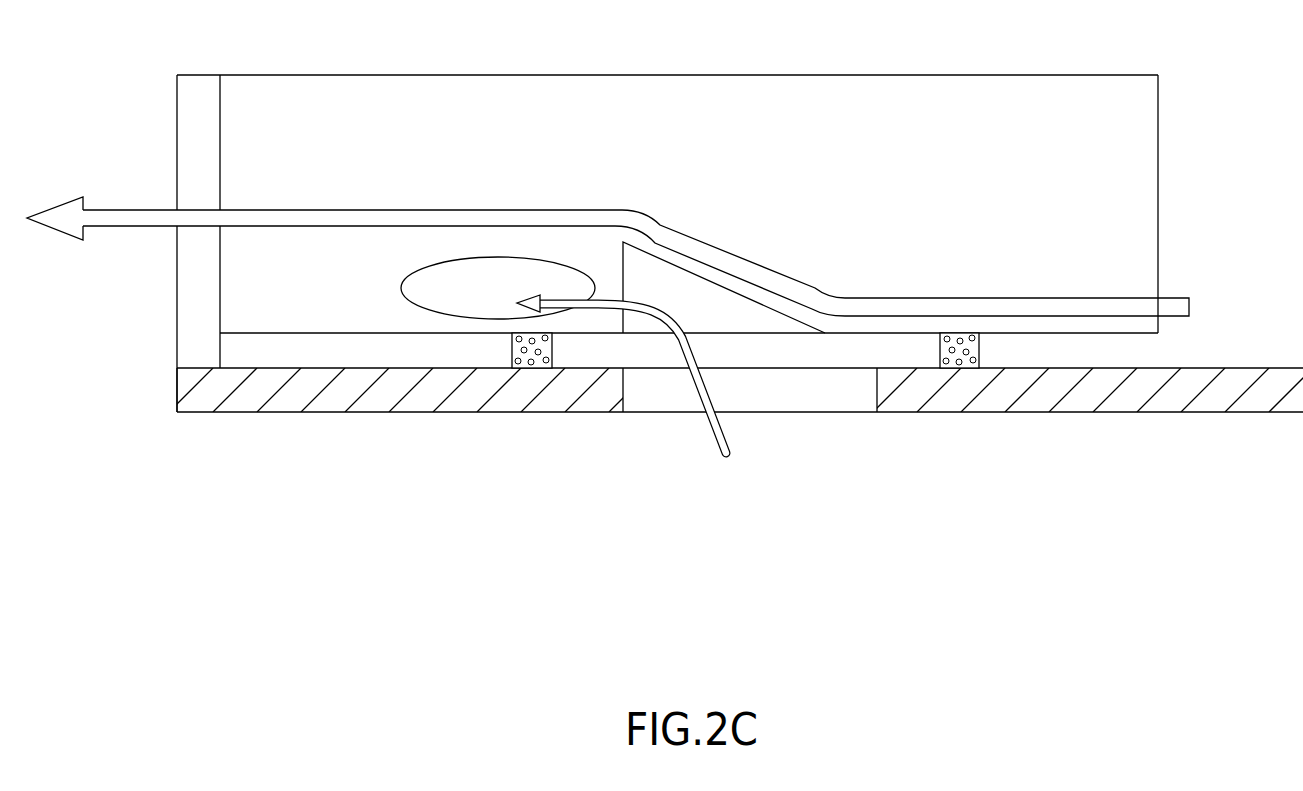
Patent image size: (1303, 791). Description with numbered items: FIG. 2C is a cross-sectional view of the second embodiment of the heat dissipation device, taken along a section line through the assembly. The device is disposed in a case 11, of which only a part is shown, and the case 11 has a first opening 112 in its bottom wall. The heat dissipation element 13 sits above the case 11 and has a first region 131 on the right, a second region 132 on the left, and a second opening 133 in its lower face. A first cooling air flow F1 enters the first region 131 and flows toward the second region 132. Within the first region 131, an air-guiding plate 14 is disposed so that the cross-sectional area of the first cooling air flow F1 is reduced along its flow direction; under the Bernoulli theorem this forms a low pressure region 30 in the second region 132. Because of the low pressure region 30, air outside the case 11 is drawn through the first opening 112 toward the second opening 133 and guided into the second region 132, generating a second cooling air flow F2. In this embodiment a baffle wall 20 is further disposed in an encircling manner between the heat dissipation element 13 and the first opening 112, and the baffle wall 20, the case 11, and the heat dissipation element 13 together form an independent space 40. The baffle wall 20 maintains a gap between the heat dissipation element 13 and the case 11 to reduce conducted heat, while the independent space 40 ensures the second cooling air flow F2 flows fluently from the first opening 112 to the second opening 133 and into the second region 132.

The case 11 is at (177, 390).
The first opening 112 is at (810, 418).
The heat dissipation element 13 is at (670, 75).
The first region 131 is at (929, 103).
The second region 132 is at (414, 103).
The second opening 133 is at (743, 341).
The air-guiding plate 14 is at (723, 288).
The baffle wall 20 is at (979, 352).
The low pressure region 30 is at (388, 290).
The independent space 40 is at (595, 364).
The first cooling air flow F1 is at (1197, 307).
The second cooling air flow F2 is at (700, 430).